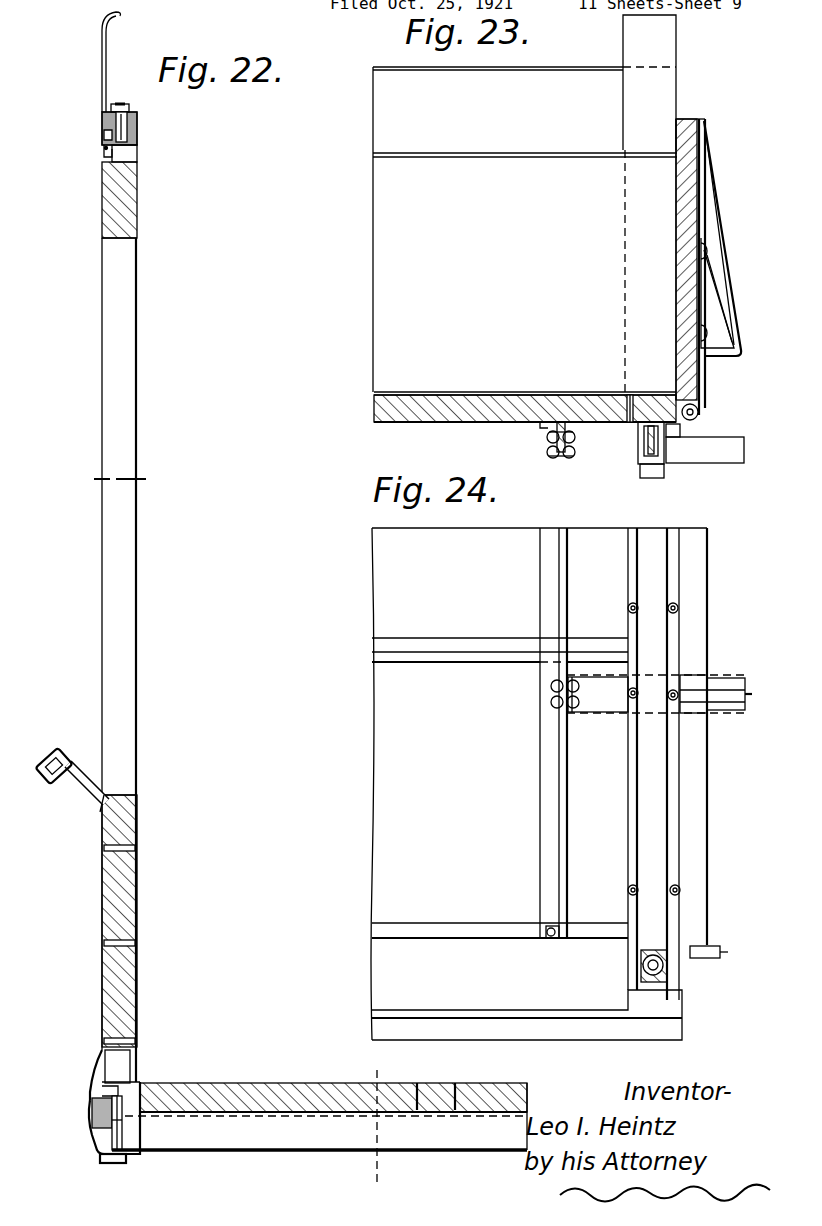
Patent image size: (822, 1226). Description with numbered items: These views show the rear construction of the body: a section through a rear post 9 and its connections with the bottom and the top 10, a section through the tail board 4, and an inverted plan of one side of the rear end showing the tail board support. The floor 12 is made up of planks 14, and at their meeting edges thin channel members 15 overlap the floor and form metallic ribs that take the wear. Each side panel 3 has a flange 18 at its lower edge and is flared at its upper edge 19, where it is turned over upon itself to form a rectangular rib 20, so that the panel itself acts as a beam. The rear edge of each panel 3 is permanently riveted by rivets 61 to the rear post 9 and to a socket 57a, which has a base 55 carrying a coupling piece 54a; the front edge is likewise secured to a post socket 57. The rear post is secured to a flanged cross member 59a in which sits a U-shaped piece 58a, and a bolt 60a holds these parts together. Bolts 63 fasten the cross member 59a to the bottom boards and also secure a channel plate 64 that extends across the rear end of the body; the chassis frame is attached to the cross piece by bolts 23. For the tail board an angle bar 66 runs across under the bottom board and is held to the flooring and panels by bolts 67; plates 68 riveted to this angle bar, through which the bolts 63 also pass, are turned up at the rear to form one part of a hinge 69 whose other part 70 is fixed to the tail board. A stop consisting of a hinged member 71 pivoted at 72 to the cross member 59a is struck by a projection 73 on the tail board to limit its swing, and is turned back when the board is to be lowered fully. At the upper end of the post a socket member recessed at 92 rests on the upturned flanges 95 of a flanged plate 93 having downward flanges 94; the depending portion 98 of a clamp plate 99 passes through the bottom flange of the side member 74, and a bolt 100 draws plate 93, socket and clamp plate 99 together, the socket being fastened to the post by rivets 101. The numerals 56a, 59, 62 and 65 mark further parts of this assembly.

In FIG. 22, the side panel 3 is at (138, 900).
In FIG. 23, the side panel 3 is at (400, 252).
In FIG. 24, the side panel 3 is at (404, 940).
In FIG. 23, the tail board 4 is at (697, 174).
In FIG. 24, the tail board 4 is at (698, 578).
In FIG. 22, the rear post 9 is at (122, 248).
In FIG. 23, the rear post 9 is at (662, 44).
In FIG. 22, the top 10 is at (84, 26).
In FIG. 22, the floor 12 is at (312, 1066).
In FIG. 24, the floor 12 is at (372, 727).
In FIG. 22, the planks 14 is at (268, 1083).
In FIG. 23, the planks 14 is at (375, 406).
In FIG. 24, the planks 14 is at (447, 679).
In FIG. 22, the channel members 15 is at (146, 1082).
In FIG. 23, the channel members 15 is at (454, 392).
In FIG. 24, the channel members 15 is at (440, 650).
In FIG. 24, the flange 18 is at (430, 926).
In FIG. 22, the flared upper edge 19 is at (72, 782).
In FIG. 23, the flared upper edge 19 is at (400, 108).
In FIG. 24, the flared upper edge 19 is at (390, 958).
In FIG. 22, the rectangular rib 20 is at (46, 756).
In FIG. 24, the rectangular rib 20 is at (546, 1036).
In FIG. 22, the bolts 23 is at (376, 1124).
In FIG. 22, the coupling piece 54a is at (118, 1062).
In FIG. 22, the base 55 is at (88, 1104).
In FIG. 22, the lug 56a is at (96, 1092).
In FIG. 24, the post socket 57 is at (554, 940).
In FIG. 22, the socket 57a is at (102, 888).
In FIG. 22, the U-shaped piece 58a is at (100, 1135).
In FIG. 23, the U-shaped piece 58a is at (640, 470).
In FIG. 24, the U-shaped piece 58a is at (660, 952).
In FIG. 24, the bracket 59 is at (700, 718).
In FIG. 22, the cross member 59a is at (214, 1150).
In FIG. 23, the cross member 59a is at (638, 452).
In FIG. 24, the cross member 59a is at (645, 770).
In FIG. 22, the bolt 60a is at (122, 1130).
In FIG. 23, the bolt 60a is at (654, 480).
In FIG. 22, the rivets 61 is at (140, 848).
In FIG. 22, the brace arm 62 is at (92, 798).
In FIG. 24, the brace arm 62 is at (665, 1002).
In FIG. 23, the bolts 63 is at (598, 402).
In FIG. 24, the bolts 63 is at (628, 608).
In FIG. 22, the channel plate 64 is at (464, 1100).
In FIG. 23, the channel plate 64 is at (644, 395).
In FIG. 23, the inclined brace 65 is at (706, 228).
In FIG. 23, the angle bar 66 is at (557, 442).
In FIG. 24, the angle bar 66 is at (556, 790).
In FIG. 23, the bolts 67 is at (548, 430).
In FIG. 22, the plates 68 is at (358, 1112).
In FIG. 24, the plates 68 is at (598, 700).
In FIG. 23, the hinge 69 is at (700, 413).
In FIG. 23, the hinge part 70 is at (682, 340).
In FIG. 24, the hinge part 70 is at (696, 676).
In FIG. 23, the hinged stop member 71 is at (690, 463).
In FIG. 24, the hinged stop member 71 is at (752, 694).
In FIG. 23, the pivot 72 is at (680, 450).
In FIG. 24, the pivot 72 is at (658, 692).
In FIG. 23, the projection 73 is at (738, 360).
In FIG. 24, the projection 73 is at (744, 678).
In FIG. 22, the side member 74 is at (102, 76).
In FIG. 22, the recess 92 is at (104, 172).
In FIG. 22, the flanged plate 93 is at (104, 150).
In FIG. 22, the downward flanges 94 is at (128, 158).
In FIG. 22, the upturned flanges 95 is at (104, 135).
In FIG. 22, the depending portion 98 is at (130, 135).
In FIG. 22, the clamp plate 99 is at (102, 118).
In FIG. 22, the bolt 100 is at (126, 106).
In FIG. 22, the rivets 101 is at (120, 218).